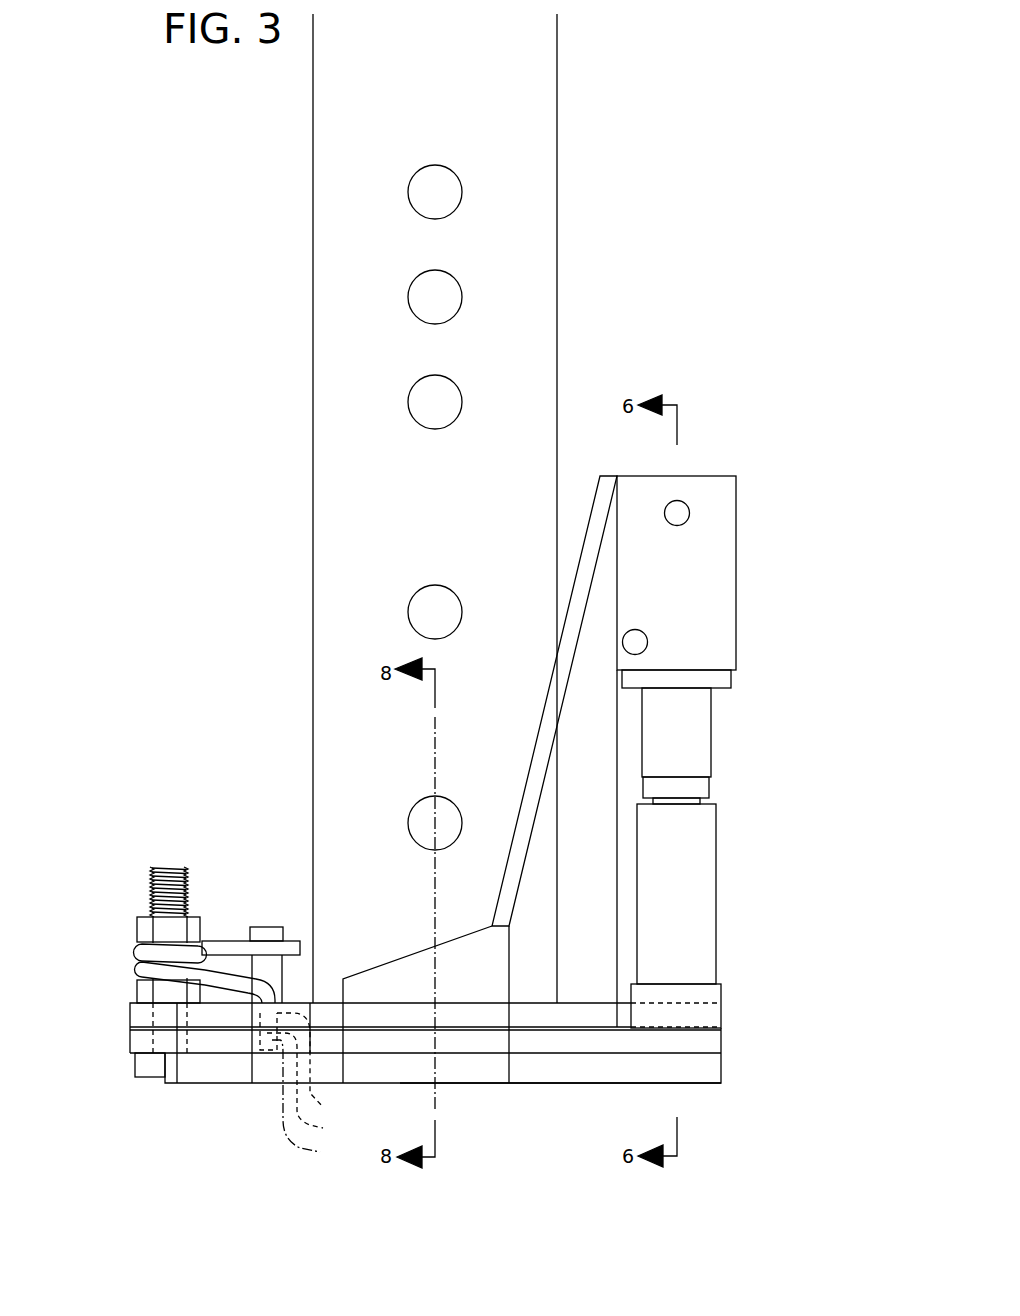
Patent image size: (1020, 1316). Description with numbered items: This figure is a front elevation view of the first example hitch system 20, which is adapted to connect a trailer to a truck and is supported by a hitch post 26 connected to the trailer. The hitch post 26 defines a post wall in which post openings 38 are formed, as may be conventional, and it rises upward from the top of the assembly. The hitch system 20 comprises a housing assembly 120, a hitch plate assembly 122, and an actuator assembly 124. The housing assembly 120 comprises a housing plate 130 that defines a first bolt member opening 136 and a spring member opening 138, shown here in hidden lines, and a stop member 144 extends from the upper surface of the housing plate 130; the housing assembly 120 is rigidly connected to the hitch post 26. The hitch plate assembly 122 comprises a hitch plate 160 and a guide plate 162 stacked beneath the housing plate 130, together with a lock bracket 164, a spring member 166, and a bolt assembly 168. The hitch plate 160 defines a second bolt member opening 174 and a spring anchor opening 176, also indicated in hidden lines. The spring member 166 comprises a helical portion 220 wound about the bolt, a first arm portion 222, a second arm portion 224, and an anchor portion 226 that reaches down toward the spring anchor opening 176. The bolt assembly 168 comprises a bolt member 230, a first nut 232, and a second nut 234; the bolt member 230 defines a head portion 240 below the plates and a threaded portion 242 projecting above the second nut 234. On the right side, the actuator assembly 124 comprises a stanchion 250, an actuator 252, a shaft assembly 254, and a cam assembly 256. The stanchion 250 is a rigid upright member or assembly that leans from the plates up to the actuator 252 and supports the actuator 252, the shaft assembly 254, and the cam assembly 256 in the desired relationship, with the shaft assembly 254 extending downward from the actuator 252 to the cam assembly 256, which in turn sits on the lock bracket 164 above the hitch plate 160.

The hitch system 20 is at (590, 745).
The hitch post 26 is at (545, 152).
The post openings 38 is at (450, 198).
The housing assembly 120 is at (438, 1067).
The hitch plate assembly 122 is at (707, 1092).
The actuator assembly 124 is at (755, 660).
The housing plate 130 is at (557, 1017).
The first bolt member opening 136 is at (145, 1015).
The spring member opening 138 is at (307, 1064).
The stop member 144 is at (268, 930).
The hitch plate 160 is at (707, 1043).
The guide plate 162 is at (710, 1070).
The lock bracket 164 is at (700, 993).
The spring member 166 is at (126, 949).
The bolt assembly 168 is at (150, 868).
The second bolt member opening 174 is at (145, 1038).
The spring anchor opening 176 is at (313, 1100).
The helical portion 220 is at (126, 971).
The first arm portion 222 is at (233, 947).
The second arm portion 224 is at (227, 980).
The anchor portion 226 is at (311, 1085).
The bolt member 230 is at (148, 884).
The first nut 232 is at (142, 990).
The second nut 234 is at (143, 928).
The head portion 240 is at (140, 1063).
The threaded portion 242 is at (157, 900).
The stanchion 250 is at (587, 565).
The actuator 252 is at (717, 575).
The shaft assembly 254 is at (720, 768).
The cam assembly 256 is at (725, 877).